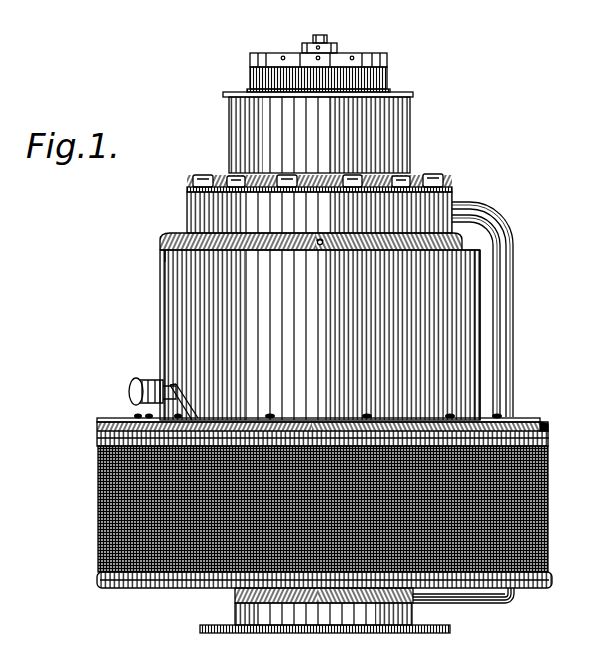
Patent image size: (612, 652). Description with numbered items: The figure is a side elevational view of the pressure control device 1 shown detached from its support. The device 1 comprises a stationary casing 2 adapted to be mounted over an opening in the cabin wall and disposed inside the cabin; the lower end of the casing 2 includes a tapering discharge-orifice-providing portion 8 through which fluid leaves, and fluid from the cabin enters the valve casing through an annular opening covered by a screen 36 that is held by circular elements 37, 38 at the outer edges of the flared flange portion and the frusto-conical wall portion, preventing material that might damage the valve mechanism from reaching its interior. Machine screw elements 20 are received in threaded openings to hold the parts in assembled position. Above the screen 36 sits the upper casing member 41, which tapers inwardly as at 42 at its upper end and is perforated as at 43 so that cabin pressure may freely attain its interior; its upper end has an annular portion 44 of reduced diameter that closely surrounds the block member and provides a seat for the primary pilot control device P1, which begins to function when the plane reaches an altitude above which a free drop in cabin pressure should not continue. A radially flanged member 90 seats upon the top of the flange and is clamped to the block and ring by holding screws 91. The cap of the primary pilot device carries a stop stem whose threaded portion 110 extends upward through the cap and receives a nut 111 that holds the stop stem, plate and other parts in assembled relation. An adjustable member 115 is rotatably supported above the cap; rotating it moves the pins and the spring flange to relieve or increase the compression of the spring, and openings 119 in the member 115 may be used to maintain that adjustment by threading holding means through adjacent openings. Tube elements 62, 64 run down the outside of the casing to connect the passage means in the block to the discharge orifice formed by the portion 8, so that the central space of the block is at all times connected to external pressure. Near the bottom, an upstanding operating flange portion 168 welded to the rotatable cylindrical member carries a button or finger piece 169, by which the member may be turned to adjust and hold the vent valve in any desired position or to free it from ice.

The threaded portion 110 is at (320, 35).
The nut 111 is at (333, 50).
The adjustable member 115 is at (371, 58).
The openings 119 is at (282, 57).
The primary pilot control device P1 is at (390, 69).
The radially flanged member 90 is at (410, 135).
The holding screws 91 is at (232, 177).
The device 1 is at (454, 189).
The annular portion 44 is at (187, 213).
The perforations 43 is at (180, 236).
The inwardly tapering portion 42 is at (163, 256).
The upper casing member 41 is at (160, 305).
The tube element 62 is at (504, 268).
The casing 2 is at (483, 318).
The machine screw elements 20 is at (453, 415).
The button 169 is at (142, 380).
The operating flange portion 168 is at (158, 412).
The circular element 37 is at (97, 445).
The screen 36 is at (98, 511).
The circular element 38 is at (97, 577).
The discharge-orifice-providing portion 8 is at (235, 594).
The tube element 64 is at (478, 597).